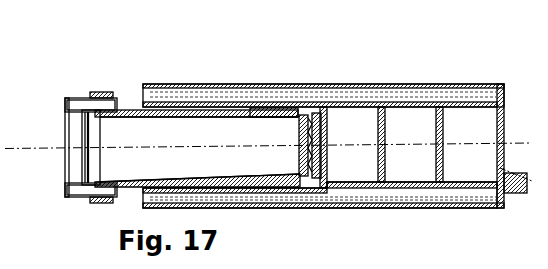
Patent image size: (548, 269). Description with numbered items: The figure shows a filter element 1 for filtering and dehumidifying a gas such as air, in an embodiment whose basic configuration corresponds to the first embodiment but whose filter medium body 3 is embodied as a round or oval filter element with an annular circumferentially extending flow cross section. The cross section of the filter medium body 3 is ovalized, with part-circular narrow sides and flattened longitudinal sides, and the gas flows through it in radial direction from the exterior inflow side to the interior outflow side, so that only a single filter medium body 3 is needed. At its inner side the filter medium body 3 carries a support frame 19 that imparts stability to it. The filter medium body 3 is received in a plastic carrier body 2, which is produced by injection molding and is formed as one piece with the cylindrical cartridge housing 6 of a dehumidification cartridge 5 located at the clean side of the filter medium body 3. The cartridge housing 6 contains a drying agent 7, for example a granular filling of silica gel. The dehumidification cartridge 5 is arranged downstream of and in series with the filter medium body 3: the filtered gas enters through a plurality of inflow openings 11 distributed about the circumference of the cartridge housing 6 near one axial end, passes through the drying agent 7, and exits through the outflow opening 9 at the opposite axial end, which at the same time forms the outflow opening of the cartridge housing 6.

The filter element 1 is at (269, 55).
The carrier body 2 is at (401, 101).
The filter medium body 3 is at (323, 97).
The dehumidification cartridge 5 is at (279, 106).
The cartridge housing 6 is at (242, 117).
The drying agent 7 is at (180, 126).
The outflow opening 9 is at (82, 168).
The inflow openings 11 is at (300, 160).
The support frame 19 is at (377, 165).